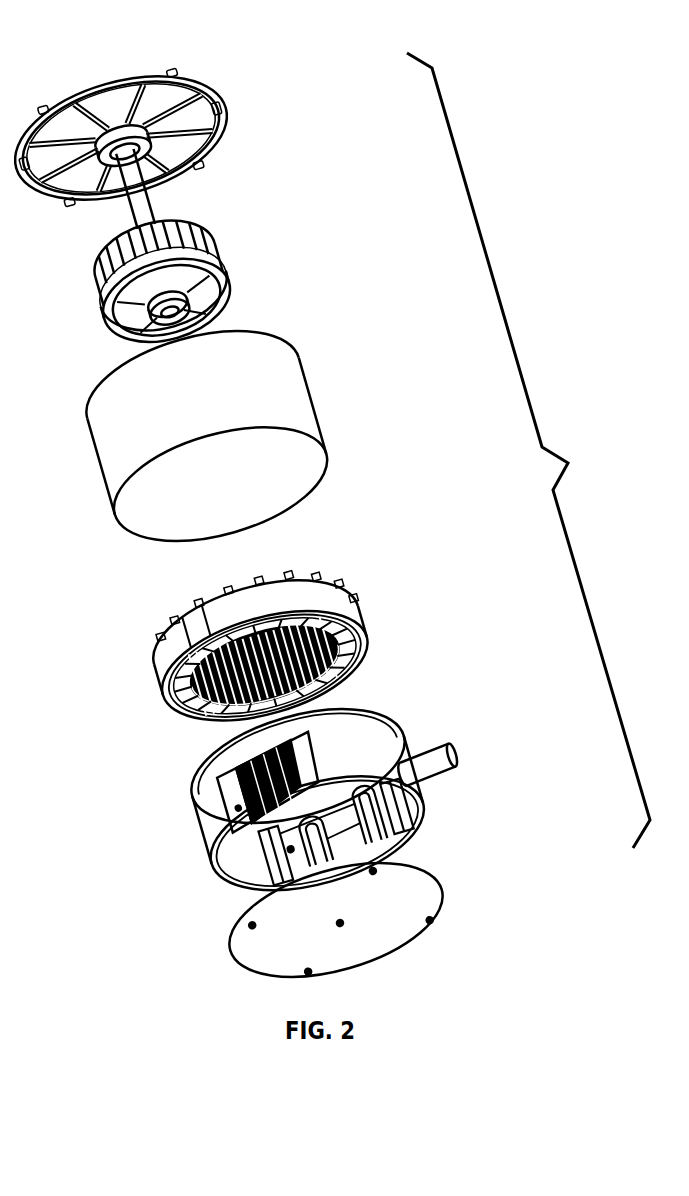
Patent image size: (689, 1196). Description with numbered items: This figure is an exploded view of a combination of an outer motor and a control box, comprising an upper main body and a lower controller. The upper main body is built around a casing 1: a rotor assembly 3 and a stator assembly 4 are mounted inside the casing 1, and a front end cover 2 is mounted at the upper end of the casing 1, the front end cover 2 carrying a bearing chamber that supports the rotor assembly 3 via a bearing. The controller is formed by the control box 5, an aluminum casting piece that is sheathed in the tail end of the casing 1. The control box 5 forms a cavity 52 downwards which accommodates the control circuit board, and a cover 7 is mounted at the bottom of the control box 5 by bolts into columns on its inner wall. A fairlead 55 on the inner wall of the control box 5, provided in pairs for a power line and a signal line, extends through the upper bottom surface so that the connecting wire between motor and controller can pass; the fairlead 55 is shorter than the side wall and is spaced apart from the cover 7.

The casing 1 is at (247, 436).
The front end cover 2 is at (184, 136).
The rotor assembly 3 is at (224, 268).
The stator assembly 4 is at (280, 632).
The control box 5 is at (266, 838).
The cover 7 is at (381, 906).
The cavity 52 is at (196, 840).
The fairlead 55 is at (234, 868).